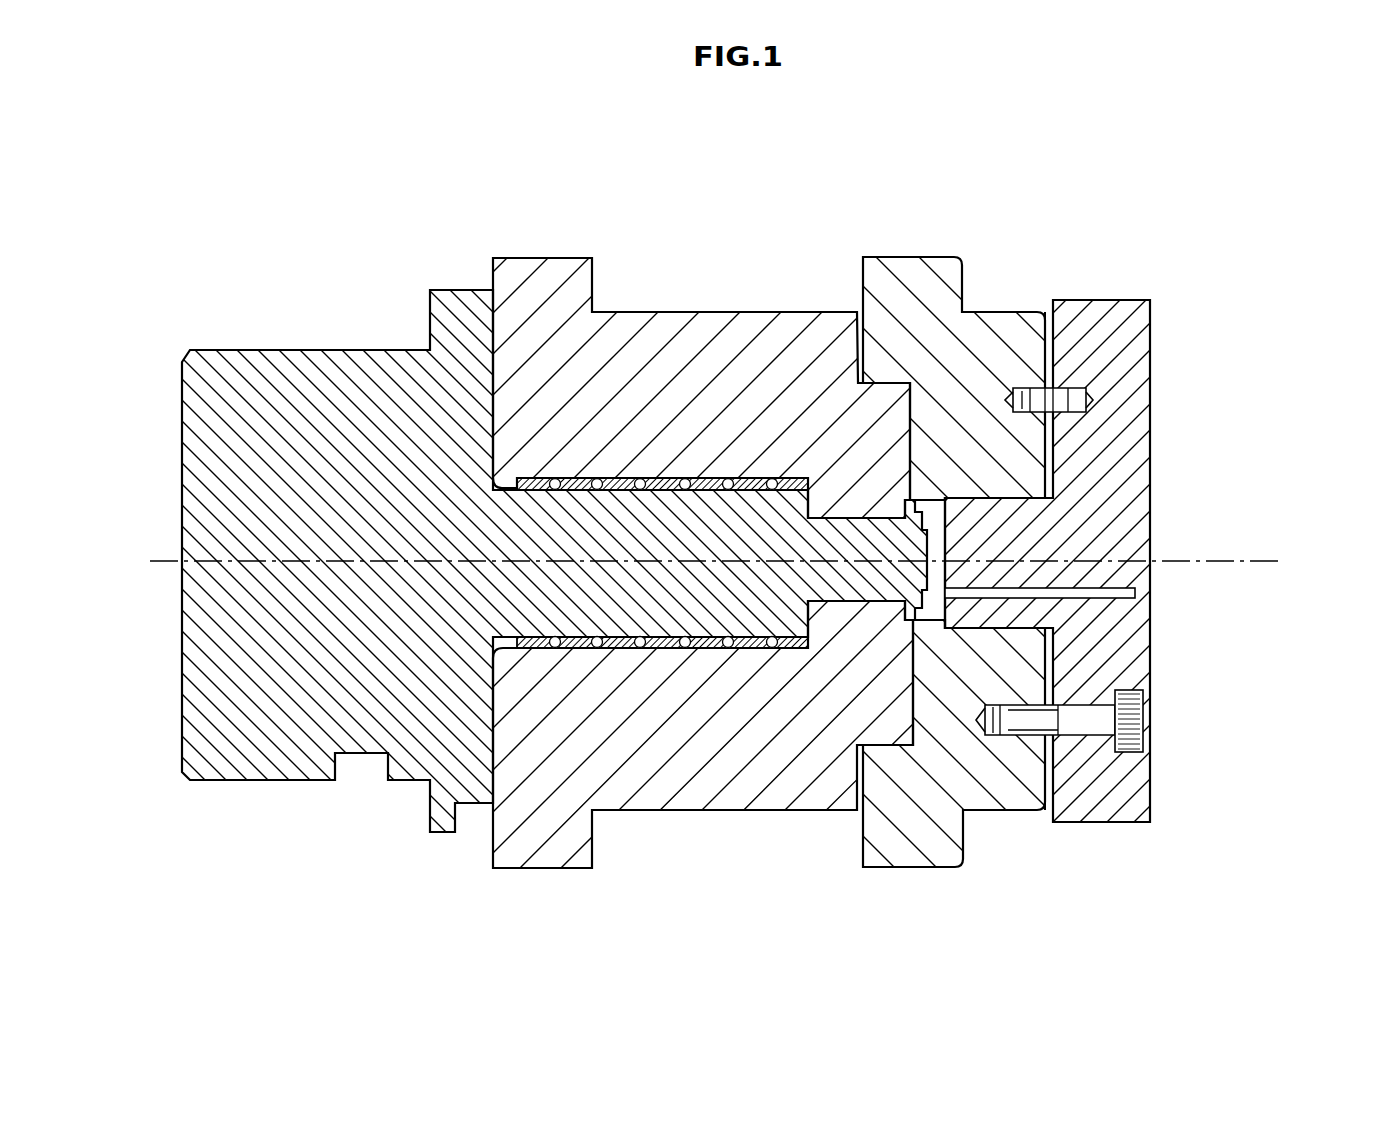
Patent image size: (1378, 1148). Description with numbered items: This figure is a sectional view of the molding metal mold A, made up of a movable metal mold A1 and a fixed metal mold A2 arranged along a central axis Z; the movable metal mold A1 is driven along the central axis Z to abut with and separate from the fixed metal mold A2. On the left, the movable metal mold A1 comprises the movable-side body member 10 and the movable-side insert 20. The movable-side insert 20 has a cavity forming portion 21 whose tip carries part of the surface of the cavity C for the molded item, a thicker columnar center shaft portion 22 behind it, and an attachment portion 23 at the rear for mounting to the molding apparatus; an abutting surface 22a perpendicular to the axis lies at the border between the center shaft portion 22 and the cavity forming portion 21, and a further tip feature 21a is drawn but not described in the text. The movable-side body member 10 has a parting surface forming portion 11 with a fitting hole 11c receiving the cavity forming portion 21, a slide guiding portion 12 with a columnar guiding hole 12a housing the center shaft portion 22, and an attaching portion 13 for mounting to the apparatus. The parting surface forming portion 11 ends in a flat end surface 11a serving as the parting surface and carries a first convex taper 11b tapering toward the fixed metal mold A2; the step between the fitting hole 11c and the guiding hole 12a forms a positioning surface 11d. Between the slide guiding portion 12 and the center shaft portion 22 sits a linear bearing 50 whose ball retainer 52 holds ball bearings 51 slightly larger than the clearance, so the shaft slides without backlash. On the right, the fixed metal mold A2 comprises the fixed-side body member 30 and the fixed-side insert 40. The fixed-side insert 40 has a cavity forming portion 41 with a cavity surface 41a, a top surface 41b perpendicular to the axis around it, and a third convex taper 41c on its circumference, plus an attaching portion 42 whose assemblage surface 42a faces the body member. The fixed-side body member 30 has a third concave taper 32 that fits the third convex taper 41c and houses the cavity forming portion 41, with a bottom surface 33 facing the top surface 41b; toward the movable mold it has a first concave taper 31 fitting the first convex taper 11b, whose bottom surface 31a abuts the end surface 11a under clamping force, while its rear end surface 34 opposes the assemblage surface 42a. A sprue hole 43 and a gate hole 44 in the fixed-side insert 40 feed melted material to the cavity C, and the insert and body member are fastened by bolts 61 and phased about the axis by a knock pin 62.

The movable-side body member 10 is at (641, 312).
The parting surface forming portion 11 is at (815, 376).
The end surface 11a is at (961, 335).
The first convex taper 11b is at (847, 330).
The fitting hole 11c is at (815, 778).
The positioning surface 11d is at (701, 753).
The slide guiding portion 12 is at (705, 319).
The guiding hole 12a is at (461, 819).
The attaching portion 13 is at (552, 300).
The movable-side insert 20 is at (232, 350).
The cavity forming portion 21 is at (790, 733).
The insert tip portion 21a is at (932, 750).
The center shaft portion 22 is at (667, 764).
The abutting surface 22a is at (766, 748).
The attachment portion 23 is at (328, 420).
The fixed-side body member 30 is at (1102, 528).
The first concave taper 31 is at (873, 296).
The bottom surface 31a is at (923, 327).
The third concave taper 32 is at (1032, 753).
The bottom surface 33 is at (981, 752).
The rear end surface 34 is at (1066, 350).
The fixed-side insert 40 is at (1122, 300).
The cavity forming portion 41 is at (1077, 563).
The cavity surface 41a is at (1075, 530).
The top surface 41b is at (1085, 499).
The third convex taper 41c is at (1078, 475).
The attaching portion 42 is at (1120, 345).
The assemblage surface 42a is at (1037, 298).
The sprue hole 43 is at (1077, 607).
The gate hole 44 is at (1094, 629).
The linear bearing 50 is at (654, 710).
The ball bearings 51 is at (655, 690).
The ball retainer 52 is at (664, 691).
The bolts 61 is at (1135, 720).
The knock pin 62 is at (1086, 396).
The molding metal mold A is at (1082, 130).
The movable metal mold A1 is at (690, 192).
The fixed metal mold A2 is at (940, 192).
The cavity C is at (873, 759).
The central axis Z is at (1250, 556).